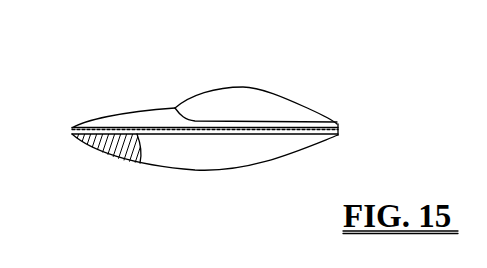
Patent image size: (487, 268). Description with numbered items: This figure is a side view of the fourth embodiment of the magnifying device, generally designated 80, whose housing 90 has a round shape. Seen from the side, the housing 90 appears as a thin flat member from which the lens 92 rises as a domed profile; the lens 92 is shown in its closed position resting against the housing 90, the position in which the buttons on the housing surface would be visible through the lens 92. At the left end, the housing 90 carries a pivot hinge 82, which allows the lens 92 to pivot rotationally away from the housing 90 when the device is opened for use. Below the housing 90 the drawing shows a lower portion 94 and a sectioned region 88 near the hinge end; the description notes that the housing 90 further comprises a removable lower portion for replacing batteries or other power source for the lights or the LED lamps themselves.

The magnifying device (fourth embodiment) 80 is at (391, 62).
The pivot hinge 82 is at (122, 117).
The weighted section 88 is at (108, 147).
The housing 90 is at (339, 130).
The lens 92 is at (245, 94).
The lower hull portion 94 is at (188, 166).